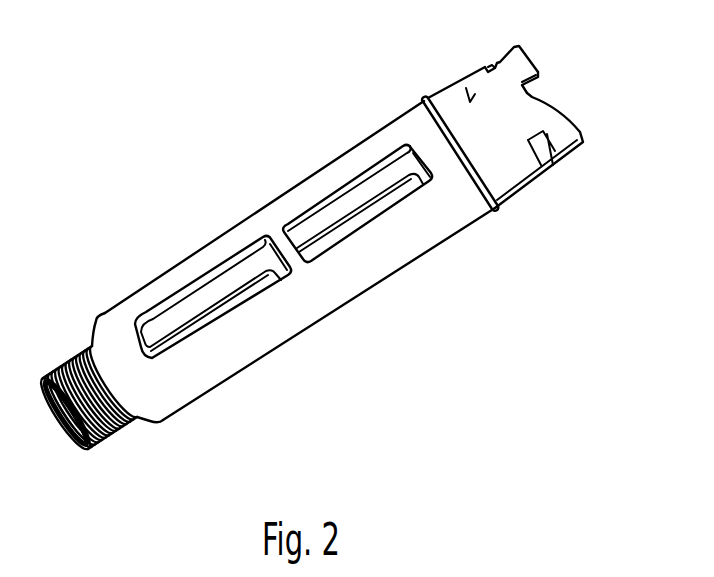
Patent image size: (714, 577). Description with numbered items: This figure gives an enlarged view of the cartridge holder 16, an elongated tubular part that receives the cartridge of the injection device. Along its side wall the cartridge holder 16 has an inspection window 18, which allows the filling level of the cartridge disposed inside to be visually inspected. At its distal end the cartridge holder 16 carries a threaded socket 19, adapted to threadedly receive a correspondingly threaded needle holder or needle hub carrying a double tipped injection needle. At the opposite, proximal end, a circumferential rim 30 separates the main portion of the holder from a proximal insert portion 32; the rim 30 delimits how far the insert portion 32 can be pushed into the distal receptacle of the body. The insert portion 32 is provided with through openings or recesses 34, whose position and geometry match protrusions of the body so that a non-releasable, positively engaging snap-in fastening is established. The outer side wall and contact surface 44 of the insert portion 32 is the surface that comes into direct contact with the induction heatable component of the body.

The cartridge holder 16 is at (277, 215).
The inspection window 18 is at (198, 300).
The threaded socket 19 is at (112, 438).
The circumferential rim 30 is at (423, 101).
The insert portion 32 is at (505, 155).
The through openings or recesses 34 is at (495, 63).
The outer side wall and contact surface 44 is at (470, 100).